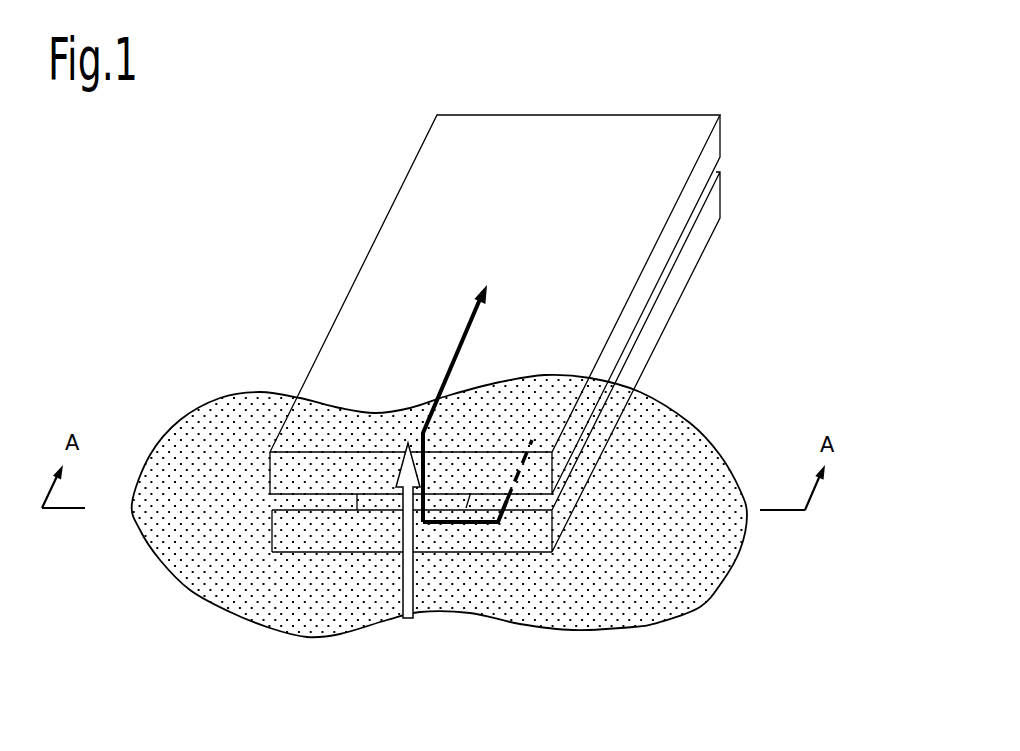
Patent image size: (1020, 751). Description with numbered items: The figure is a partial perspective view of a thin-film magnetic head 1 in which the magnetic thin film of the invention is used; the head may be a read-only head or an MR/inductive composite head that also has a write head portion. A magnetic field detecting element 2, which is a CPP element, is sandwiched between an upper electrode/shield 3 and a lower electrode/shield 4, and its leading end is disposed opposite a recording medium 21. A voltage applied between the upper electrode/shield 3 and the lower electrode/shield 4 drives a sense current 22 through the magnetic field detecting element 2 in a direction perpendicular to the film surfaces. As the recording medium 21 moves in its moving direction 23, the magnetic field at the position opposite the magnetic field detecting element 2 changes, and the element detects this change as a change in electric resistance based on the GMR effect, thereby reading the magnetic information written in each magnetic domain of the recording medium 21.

The thin-film magnetic head 1 is at (537, 276).
The magnetic field detecting element 2 is at (377, 500).
The upper electrode/shield 3 is at (687, 156).
The lower electrode/shield 4 is at (672, 295).
The recording medium 21 is at (693, 423).
The sense current 22 is at (470, 313).
The moving direction 23 is at (412, 562).